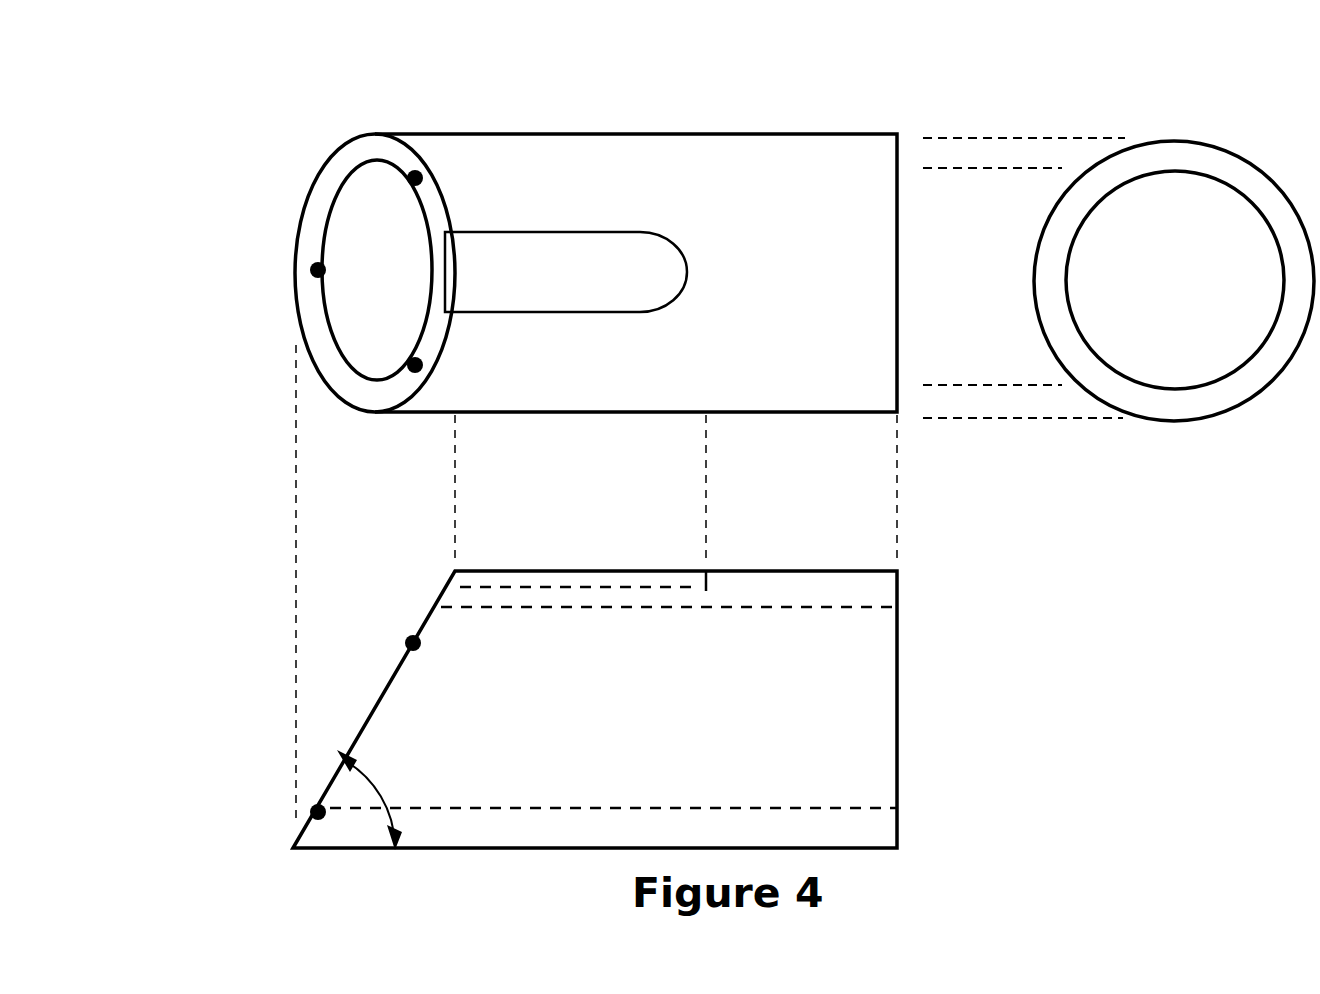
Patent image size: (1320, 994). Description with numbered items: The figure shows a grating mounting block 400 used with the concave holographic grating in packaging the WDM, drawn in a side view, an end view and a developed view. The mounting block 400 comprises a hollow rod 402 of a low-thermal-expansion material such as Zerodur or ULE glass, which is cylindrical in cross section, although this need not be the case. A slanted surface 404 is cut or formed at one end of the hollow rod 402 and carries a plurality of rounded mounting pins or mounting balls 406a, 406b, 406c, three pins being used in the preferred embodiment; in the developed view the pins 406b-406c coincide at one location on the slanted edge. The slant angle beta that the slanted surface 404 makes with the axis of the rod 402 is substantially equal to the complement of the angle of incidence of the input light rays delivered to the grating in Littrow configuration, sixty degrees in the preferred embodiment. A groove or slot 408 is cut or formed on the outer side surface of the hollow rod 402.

The mounting block 400 is at (452, 92).
The hollow rod 402 is at (815, 135).
The slanted surface 404 is at (316, 228).
The mounting pin 406a is at (318, 272).
The mounting pin 406b is at (415, 178).
The mounting pin 406c is at (415, 365).
The mounting pins 406b-406c is at (432, 650).
The slot 408 is at (585, 232).